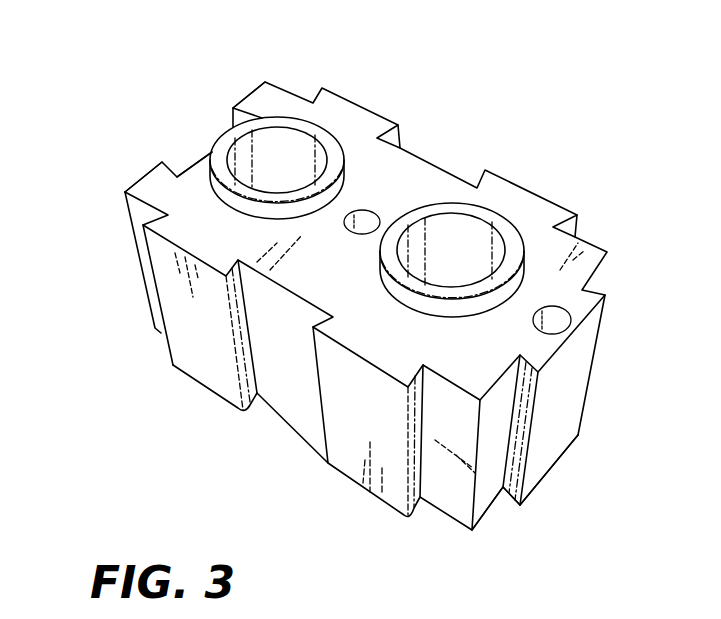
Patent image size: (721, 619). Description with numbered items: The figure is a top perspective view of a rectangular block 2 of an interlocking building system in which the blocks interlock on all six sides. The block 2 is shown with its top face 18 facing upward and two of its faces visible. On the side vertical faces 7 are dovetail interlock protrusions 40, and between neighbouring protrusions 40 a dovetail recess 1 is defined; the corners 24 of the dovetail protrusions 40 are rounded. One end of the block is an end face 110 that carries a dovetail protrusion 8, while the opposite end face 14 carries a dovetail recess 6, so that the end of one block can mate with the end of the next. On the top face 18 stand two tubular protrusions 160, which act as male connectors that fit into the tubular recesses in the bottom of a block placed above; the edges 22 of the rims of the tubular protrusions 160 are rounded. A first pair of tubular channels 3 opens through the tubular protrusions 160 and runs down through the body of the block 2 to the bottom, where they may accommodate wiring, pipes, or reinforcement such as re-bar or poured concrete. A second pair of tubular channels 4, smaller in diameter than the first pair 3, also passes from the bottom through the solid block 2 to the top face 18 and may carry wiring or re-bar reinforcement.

The dovetail recess 1 is at (290, 412).
The rectangular block 2 is at (108, 258).
The first pair of tubular channels 3 is at (367, 217).
The second pair of tubular channels 4 is at (457, 272).
The dovetail recess 6 is at (198, 160).
The side vertical faces 7 is at (448, 520).
The dovetail protrusion 8 is at (563, 460).
The end face 14 is at (143, 178).
The top face 18 is at (421, 252).
The edges of the rims of the tubular protrusions 22 is at (402, 292).
The corners of the dovetail protrusions 24 is at (580, 434).
The dovetail interlock protrusions 40 is at (362, 487).
The end face 110 is at (490, 508).
The tubular protrusions 160 is at (447, 318).